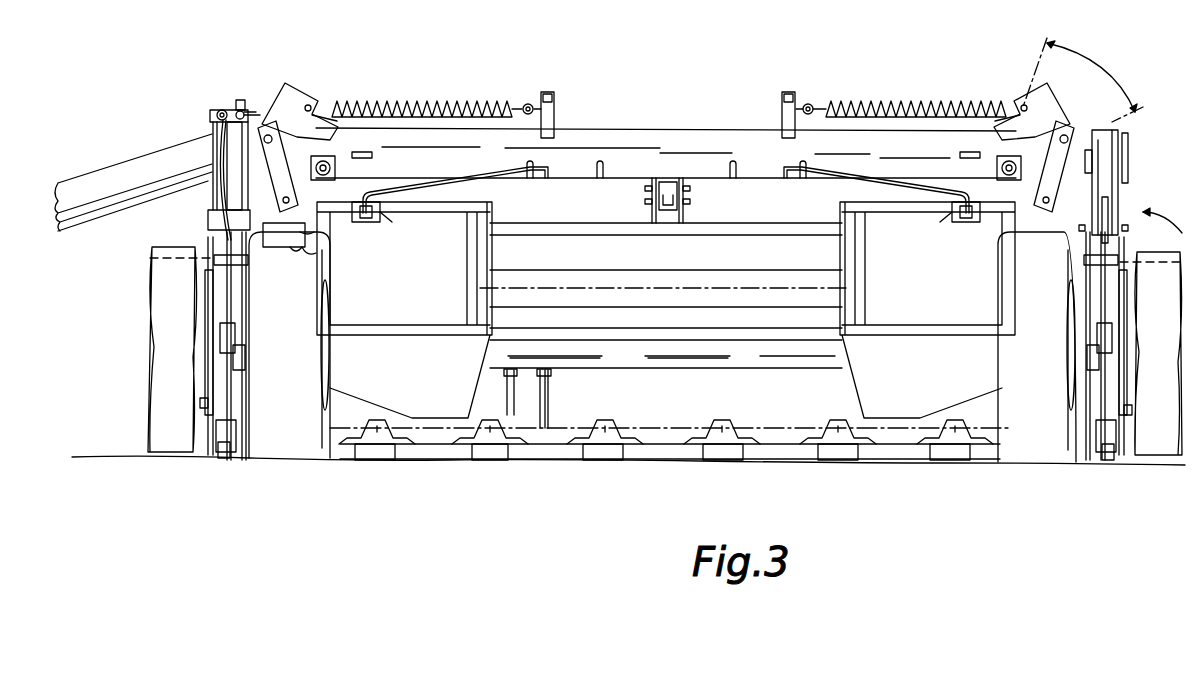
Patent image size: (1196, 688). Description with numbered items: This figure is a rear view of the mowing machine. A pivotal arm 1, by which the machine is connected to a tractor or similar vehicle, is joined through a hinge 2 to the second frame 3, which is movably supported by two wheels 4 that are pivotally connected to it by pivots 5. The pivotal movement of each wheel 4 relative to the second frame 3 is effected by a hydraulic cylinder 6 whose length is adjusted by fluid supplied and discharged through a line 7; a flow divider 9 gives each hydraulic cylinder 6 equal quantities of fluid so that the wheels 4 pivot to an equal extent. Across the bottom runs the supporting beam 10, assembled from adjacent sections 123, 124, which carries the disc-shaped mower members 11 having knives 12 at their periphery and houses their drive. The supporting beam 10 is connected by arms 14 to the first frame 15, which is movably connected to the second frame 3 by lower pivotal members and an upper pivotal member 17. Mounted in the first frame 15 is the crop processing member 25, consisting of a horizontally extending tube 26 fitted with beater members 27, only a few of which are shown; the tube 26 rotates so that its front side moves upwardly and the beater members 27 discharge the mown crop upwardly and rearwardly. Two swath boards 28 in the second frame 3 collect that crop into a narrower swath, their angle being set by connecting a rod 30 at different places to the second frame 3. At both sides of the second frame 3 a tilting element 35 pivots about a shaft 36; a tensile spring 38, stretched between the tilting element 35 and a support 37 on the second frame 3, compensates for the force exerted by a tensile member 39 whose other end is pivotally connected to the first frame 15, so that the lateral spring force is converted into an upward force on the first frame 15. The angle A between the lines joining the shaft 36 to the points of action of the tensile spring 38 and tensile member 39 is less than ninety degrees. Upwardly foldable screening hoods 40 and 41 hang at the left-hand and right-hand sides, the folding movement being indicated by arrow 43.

The pivotal arm 1 is at (120, 166).
The hinge 2 is at (243, 99).
The second frame 3 is at (617, 181).
The wheels 4 is at (285, 456).
The pivots 5 is at (200, 402).
The hydraulic cylinder 6 is at (229, 304).
The line 7 is at (214, 141).
The flow divider 9 is at (224, 108).
The supporting beam 10 is at (678, 463).
The mower members 11 is at (580, 451).
The knives 12 is at (438, 440).
The arms 14 is at (226, 459).
The first frame 15 is at (290, 244).
The upper pivotal member 17 is at (688, 201).
The crop processing member 25 is at (587, 367).
The tube 26 is at (747, 362).
The beater members 27 is at (549, 400).
The swath boards 28 is at (347, 304).
The rod 30 is at (456, 180).
The tilting element 35 is at (298, 100).
The shaft 36 is at (338, 167).
The support 37 is at (549, 92).
The tensile spring 38 is at (436, 100).
The tensile member 39 is at (281, 152).
The screening hood 40 is at (157, 249).
The screening hood 41 is at (1160, 259).
The arrow 43 is at (1166, 208).
The section 123 is at (370, 456).
The section 124 is at (447, 456).
The angle A is at (1083, 80).